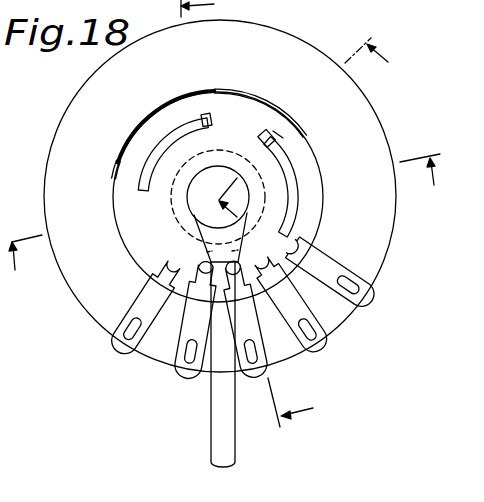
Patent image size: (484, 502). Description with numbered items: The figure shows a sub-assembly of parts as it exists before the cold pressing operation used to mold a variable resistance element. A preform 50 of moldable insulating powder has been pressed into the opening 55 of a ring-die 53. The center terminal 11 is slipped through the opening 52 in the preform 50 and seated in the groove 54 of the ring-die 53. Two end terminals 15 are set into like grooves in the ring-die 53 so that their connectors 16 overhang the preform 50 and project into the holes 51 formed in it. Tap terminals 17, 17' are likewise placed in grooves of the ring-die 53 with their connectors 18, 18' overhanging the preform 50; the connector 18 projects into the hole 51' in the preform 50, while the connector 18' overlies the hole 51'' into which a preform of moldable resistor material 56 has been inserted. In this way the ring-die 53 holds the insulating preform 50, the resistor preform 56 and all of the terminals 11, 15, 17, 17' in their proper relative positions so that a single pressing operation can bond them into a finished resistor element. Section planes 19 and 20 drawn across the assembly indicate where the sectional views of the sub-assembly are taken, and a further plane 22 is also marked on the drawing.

The center terminal 11 is at (260, 350).
The end terminal 15 is at (312, 347).
The connector 16 is at (200, 297).
The tap terminal 17 is at (131, 316).
The tap terminal 17' is at (344, 278).
The connector 18 is at (160, 140).
The connector 18' is at (311, 187).
The section plane 19 19 is at (298, 125).
The section plane 20 20 is at (253, 213).
The section line 22- 22 is at (220, 225).
The preform 50 is at (232, 107).
The hole 51 is at (227, 251).
The hole 51' is at (194, 92).
The hole 51'' is at (285, 109).
The opening 52 is at (218, 237).
The ring-die 53 is at (301, 37).
The groove 54 is at (247, 380).
The opening 55 is at (120, 173).
The preform of moldable resistor material 56 is at (276, 140).